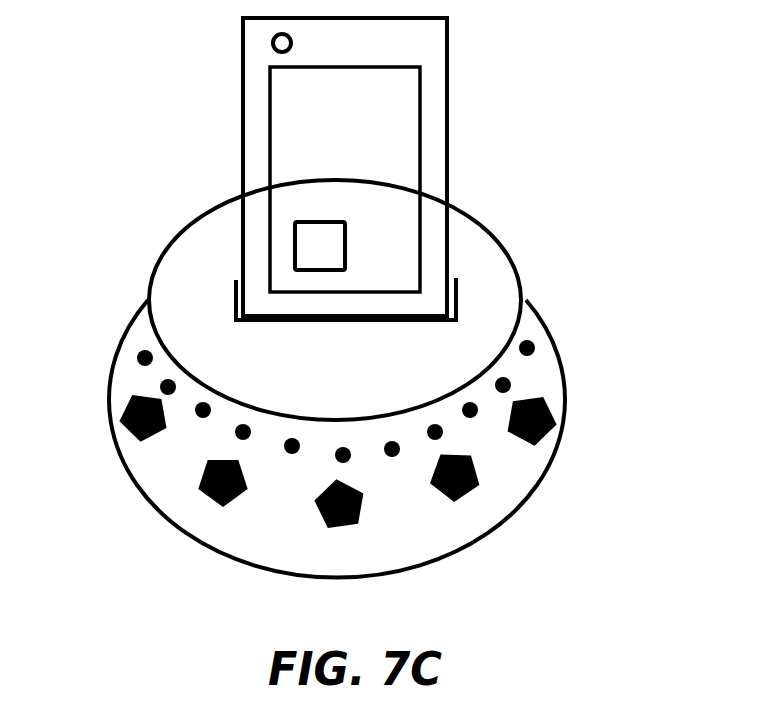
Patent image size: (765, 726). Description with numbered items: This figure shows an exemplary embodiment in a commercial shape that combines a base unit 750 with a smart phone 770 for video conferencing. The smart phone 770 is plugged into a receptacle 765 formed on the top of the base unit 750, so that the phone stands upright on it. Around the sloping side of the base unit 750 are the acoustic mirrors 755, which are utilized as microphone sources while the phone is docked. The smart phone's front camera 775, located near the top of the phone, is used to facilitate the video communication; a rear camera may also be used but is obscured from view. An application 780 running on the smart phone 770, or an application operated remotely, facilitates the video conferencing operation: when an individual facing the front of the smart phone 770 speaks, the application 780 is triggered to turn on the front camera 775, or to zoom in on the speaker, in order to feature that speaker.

The dock base 750 is at (500, 290).
The acoustic mirrors 755 is at (550, 432).
The receptacle 765 is at (230, 294).
The smart phone 770 is at (433, 42).
The camera 775 is at (272, 40).
The application 780 is at (312, 220).